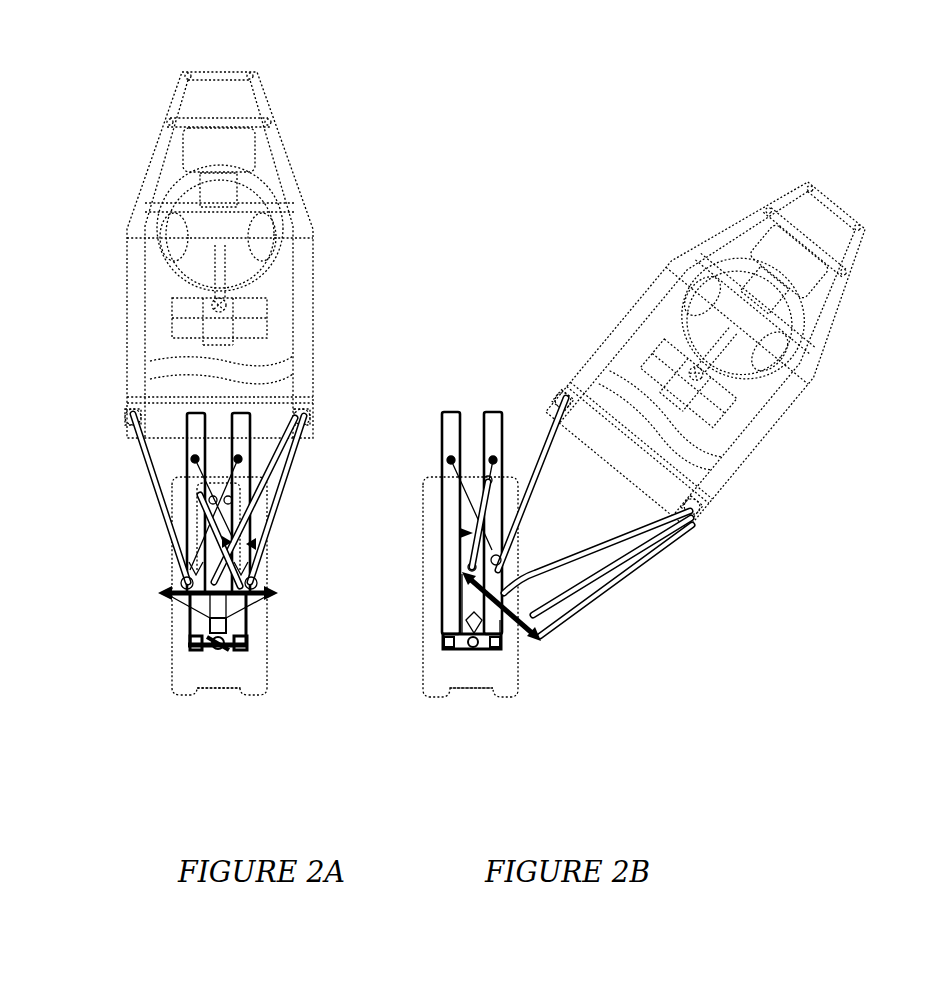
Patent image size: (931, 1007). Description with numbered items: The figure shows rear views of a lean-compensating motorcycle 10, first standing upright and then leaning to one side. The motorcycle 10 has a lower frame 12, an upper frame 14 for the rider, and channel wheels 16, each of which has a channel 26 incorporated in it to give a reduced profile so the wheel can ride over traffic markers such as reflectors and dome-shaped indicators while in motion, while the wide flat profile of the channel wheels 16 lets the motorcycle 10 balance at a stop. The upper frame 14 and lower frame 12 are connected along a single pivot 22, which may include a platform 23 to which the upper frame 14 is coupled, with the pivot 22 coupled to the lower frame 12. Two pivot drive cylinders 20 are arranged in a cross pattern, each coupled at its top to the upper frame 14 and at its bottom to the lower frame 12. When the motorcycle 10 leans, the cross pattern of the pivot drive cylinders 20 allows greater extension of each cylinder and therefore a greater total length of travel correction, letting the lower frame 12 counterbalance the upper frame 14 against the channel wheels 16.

In FIG. 2A, the lean-compensating motorcycle 10 is at (110, 45).
In FIG. 2B, the lean-compensating motorcycle 10 is at (649, 160).
In FIG. 2A, the lower frame 12 is at (258, 662).
In FIG. 2B, the lower frame 12 is at (436, 664).
In FIG. 2A, the upper frame 14 is at (186, 546).
In FIG. 2B, the upper frame 14 is at (614, 572).
In FIG. 2A, the channel wheels 16 is at (178, 688).
In FIG. 2B, the channel wheels 16 is at (505, 694).
In FIG. 2A, the pivot drive cylinders 20 is at (262, 533).
In FIG. 2B, the pivot drive cylinders 20 is at (445, 533).
In FIG. 2A, the pivot 22 is at (229, 667).
In FIG. 2B, the pivot 22 is at (461, 664).
In FIG. 2A, the platform 23 is at (268, 582).
In FIG. 2B, the platform 23 is at (546, 634).
In FIG. 2A, the channel 26 is at (222, 698).
In FIG. 2B, the channel 26 is at (468, 702).